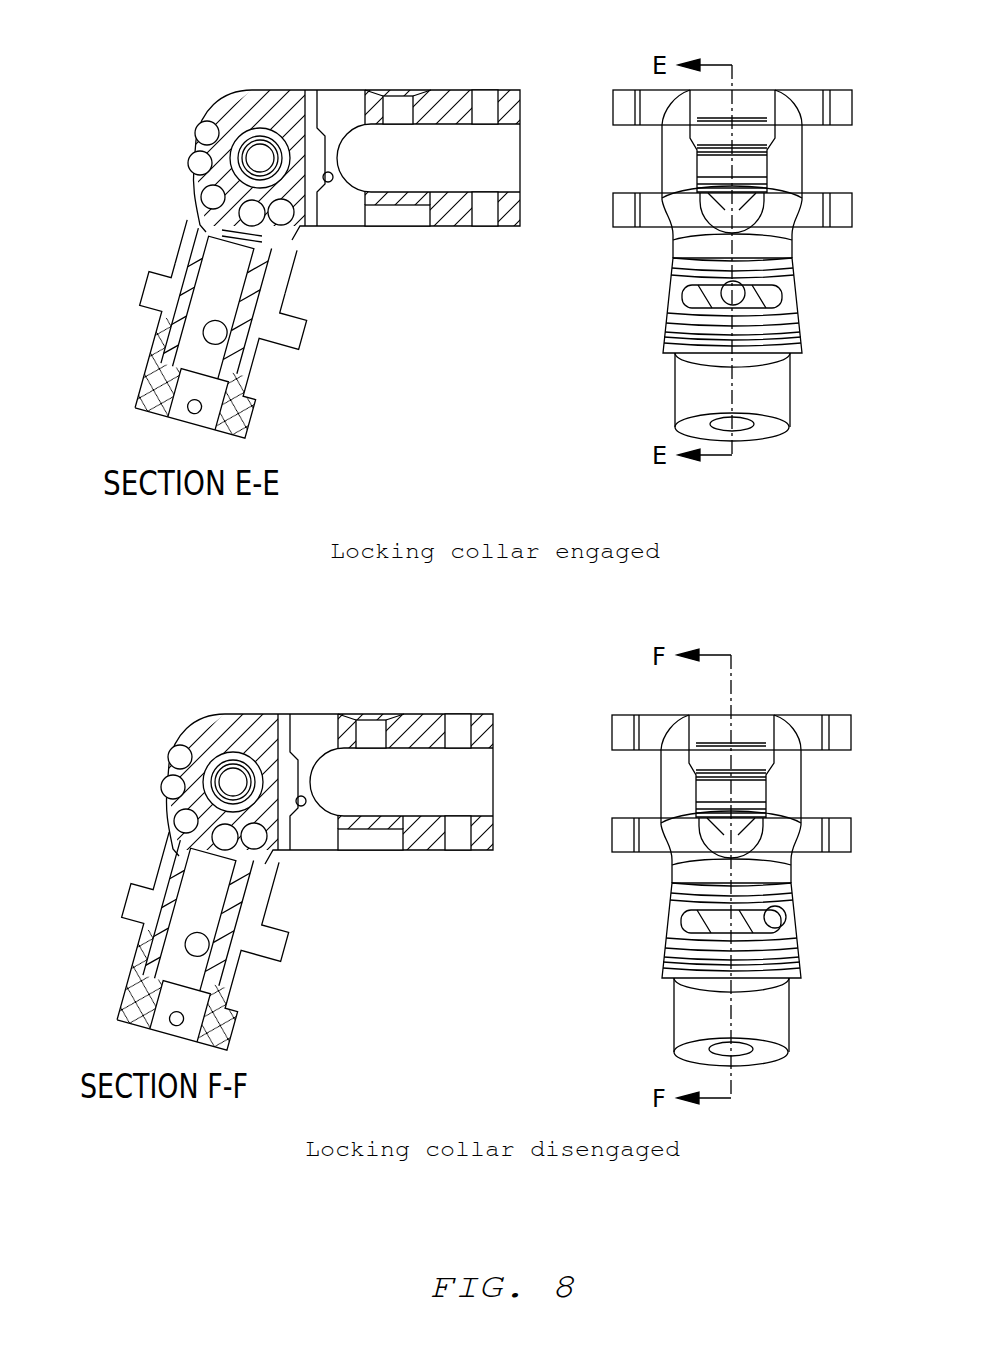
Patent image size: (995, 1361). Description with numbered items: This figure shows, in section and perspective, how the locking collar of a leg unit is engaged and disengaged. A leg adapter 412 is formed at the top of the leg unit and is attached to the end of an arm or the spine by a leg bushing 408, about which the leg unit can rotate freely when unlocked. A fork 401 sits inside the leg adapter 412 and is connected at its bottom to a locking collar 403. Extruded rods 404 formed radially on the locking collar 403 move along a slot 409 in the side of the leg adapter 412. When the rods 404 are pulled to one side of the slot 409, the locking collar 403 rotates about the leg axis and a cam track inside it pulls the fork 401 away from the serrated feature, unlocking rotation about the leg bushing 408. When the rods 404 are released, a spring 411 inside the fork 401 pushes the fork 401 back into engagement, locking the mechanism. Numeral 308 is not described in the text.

The fork head body 308 is at (258, 110).
The leg bushing 408 is at (237, 155).
The spring 411 is at (240, 232).
The leg adapter 412 is at (158, 355).
The fork 401 is at (280, 226).
The extruded rods 404 is at (275, 327).
The locking collar 403 is at (237, 352).
The slot 409 is at (697, 302).